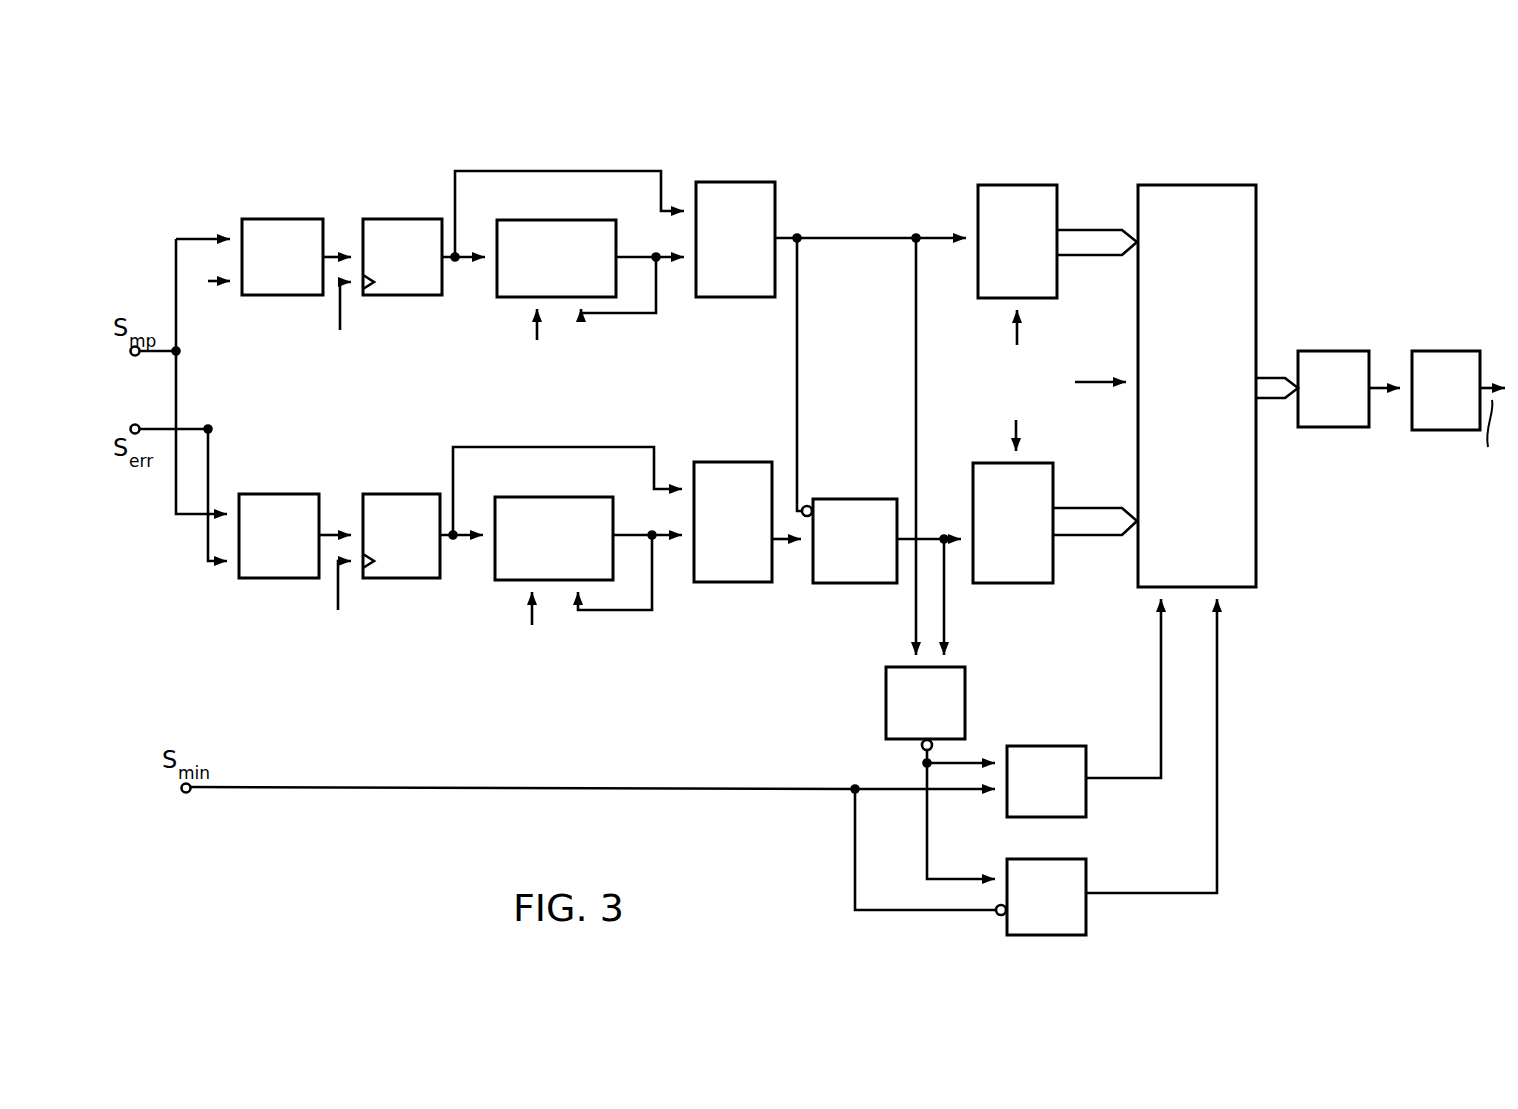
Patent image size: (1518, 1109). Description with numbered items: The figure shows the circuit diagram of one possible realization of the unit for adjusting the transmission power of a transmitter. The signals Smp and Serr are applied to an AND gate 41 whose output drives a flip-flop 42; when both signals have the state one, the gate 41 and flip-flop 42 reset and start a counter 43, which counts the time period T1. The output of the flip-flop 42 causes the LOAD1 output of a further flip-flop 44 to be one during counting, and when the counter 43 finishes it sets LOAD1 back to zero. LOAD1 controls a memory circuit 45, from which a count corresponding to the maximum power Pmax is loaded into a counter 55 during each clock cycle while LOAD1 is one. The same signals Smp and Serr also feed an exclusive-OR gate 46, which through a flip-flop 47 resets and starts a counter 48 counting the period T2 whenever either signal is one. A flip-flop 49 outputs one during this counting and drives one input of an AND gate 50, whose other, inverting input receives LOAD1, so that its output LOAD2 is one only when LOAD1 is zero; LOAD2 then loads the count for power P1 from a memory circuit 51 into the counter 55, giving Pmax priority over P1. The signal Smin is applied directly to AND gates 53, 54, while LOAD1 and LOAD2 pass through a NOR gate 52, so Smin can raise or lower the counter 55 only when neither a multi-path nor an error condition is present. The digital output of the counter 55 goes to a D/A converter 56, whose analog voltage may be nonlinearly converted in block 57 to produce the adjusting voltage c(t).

The AND gate 41 is at (287, 219).
The flip-flop 42 is at (406, 219).
The counter 43 is at (537, 220).
The flip-flop 44 is at (740, 182).
The memory circuit 45 is at (1025, 185).
The exclusive-OR gate 46 is at (284, 494).
The flip-flop 47 is at (404, 494).
The counter 48 is at (541, 497).
The flip-flop 49 is at (732, 462).
The AND gate 50 is at (852, 499).
The memory circuit 51 is at (1040, 463).
The NOR gate 52 is at (965, 690).
The AND gate 53 is at (1064, 746).
The AND gate 54 is at (1086, 875).
The counter 55 is at (1210, 185).
The D/A converter 56 is at (1347, 351).
The block 57 is at (1452, 351).